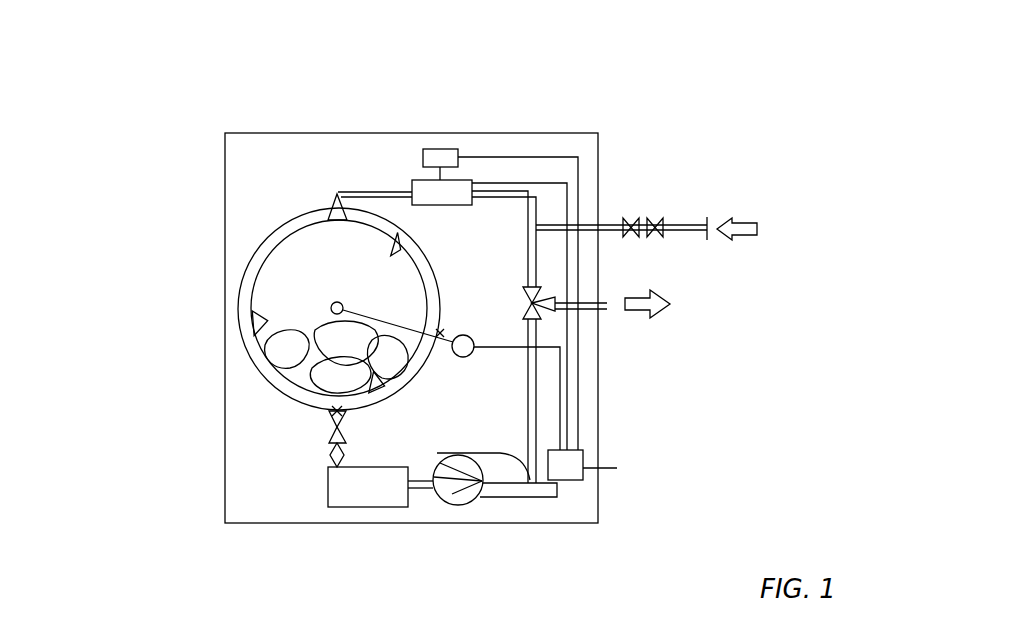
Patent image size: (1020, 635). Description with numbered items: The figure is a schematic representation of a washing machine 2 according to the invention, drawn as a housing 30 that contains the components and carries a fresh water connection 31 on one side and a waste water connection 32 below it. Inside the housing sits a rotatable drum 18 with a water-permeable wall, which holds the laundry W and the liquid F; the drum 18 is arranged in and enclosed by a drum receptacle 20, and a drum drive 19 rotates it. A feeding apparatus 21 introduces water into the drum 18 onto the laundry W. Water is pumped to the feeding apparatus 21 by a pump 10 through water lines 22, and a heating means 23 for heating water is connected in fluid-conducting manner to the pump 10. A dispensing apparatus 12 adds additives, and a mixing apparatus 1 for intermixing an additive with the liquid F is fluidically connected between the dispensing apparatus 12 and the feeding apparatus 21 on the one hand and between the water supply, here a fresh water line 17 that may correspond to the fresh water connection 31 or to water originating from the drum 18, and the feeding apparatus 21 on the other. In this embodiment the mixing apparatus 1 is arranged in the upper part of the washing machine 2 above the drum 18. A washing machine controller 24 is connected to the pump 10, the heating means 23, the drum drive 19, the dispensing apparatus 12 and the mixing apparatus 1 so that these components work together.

The mixing apparatus 1 is at (413, 180).
The washing machine 2 is at (70, 34).
The pump 10 is at (465, 506).
The dispensing apparatus 12 is at (451, 148).
The fresh water line 17 is at (587, 226).
The drum 18 is at (293, 233).
The drum drive 19 is at (472, 355).
The drum receptacle 20 is at (291, 213).
The feeding apparatus 21 is at (321, 197).
The water lines 22 is at (500, 185).
The heating means 23 is at (530, 486).
The washing machine controller 24 is at (608, 468).
The housing 30 is at (225, 230).
The fresh water connection 31 is at (687, 237).
The waste water connection 32 is at (607, 317).
The liquid F is at (280, 288).
The laundry W is at (336, 380).